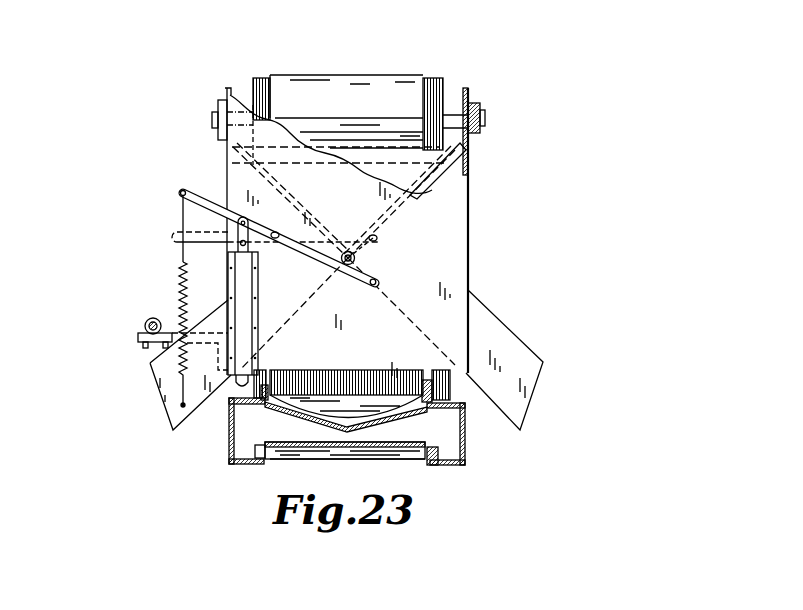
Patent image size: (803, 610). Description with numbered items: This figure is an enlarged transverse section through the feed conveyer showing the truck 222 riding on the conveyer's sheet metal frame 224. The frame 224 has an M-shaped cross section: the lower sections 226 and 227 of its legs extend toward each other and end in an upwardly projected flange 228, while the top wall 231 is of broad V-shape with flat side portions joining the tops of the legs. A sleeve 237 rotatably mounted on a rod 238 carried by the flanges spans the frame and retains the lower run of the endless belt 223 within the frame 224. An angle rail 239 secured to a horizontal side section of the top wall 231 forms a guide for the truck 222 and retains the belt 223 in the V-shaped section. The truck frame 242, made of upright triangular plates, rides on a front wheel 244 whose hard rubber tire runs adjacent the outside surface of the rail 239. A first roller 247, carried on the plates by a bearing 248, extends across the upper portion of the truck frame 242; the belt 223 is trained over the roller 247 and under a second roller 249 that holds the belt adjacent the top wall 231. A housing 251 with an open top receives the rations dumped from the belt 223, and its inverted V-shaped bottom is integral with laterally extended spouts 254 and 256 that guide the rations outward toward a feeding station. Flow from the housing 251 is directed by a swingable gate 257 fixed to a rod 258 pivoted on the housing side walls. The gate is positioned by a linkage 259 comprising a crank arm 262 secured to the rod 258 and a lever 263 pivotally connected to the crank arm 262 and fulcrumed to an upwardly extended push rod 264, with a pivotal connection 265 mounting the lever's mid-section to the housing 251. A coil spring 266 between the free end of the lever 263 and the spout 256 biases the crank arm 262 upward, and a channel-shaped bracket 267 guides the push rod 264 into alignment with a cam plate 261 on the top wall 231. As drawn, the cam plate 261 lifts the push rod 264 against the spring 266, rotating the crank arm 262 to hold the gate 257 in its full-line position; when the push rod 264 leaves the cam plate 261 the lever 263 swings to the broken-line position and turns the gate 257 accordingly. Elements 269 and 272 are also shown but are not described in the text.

The truck 222 is at (267, 62).
The endless belt 223 is at (367, 75).
The sheet metal frame 224 is at (222, 460).
The lower section of frame leg 226 is at (243, 463).
The lower section of frame leg 227 is at (455, 465).
The upwardly projected flange 228 is at (261, 445).
The top wall 231 is at (362, 425).
The sleeve 237 is at (400, 458).
The rod 238 is at (440, 467).
The angle rail 239 is at (290, 332).
The truck frame 242 is at (228, 88).
The front wheel 244 is at (257, 397).
The first roller 247 is at (443, 78).
The bearing 248 is at (218, 100).
The second roller 249 is at (310, 370).
The housing 251 is at (457, 220).
The spout 254 is at (535, 355).
The spout 256 is at (167, 398).
The swingable gate 257 is at (437, 180).
The rod 258 is at (355, 258).
The linkage 259 is at (268, 213).
The cam plate 261 is at (237, 380).
The crank arm 262 is at (367, 267).
The lever 263 is at (312, 256).
The push rod 264 is at (236, 246).
The pivotal connection 265 is at (277, 230).
The coil spring 266 is at (182, 277).
The channel-shaped bracket 267 is at (243, 288).
The eye bolt 269 is at (153, 318).
The bracket 272 is at (138, 338).